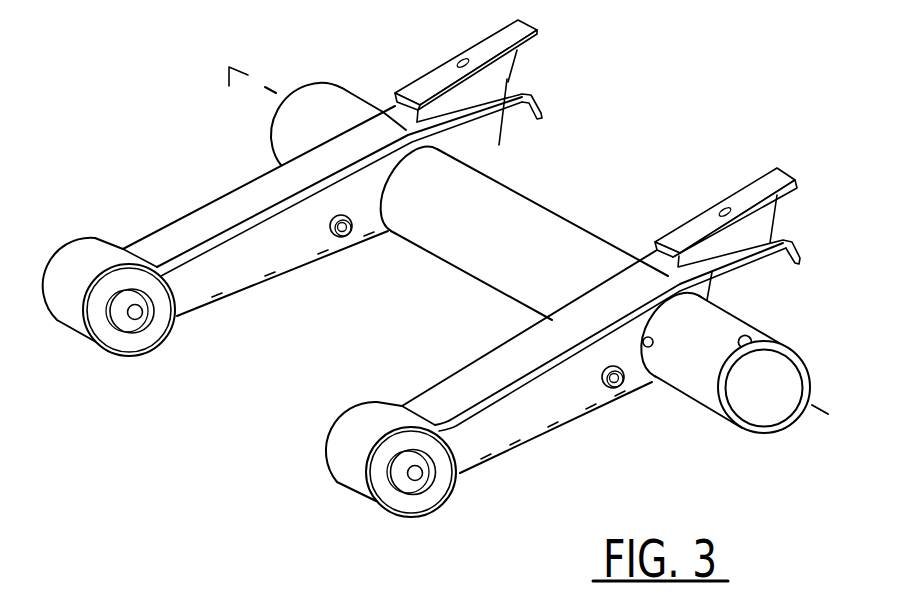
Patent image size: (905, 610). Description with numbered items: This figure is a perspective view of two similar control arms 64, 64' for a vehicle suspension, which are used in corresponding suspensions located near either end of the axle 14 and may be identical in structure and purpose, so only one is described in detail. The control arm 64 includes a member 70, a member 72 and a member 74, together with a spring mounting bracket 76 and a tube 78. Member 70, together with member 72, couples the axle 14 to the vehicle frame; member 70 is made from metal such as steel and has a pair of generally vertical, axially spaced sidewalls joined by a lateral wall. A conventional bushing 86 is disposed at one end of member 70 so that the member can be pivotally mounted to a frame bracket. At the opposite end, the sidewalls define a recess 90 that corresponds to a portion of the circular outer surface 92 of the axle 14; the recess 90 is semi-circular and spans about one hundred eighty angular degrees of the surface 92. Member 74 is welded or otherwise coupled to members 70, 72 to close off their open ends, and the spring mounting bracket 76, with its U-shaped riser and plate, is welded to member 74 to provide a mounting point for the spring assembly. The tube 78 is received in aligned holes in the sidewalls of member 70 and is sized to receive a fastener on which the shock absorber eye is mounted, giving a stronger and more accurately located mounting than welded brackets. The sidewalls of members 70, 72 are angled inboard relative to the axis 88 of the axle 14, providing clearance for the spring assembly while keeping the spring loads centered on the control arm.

The axle 14 is at (547, 235).
The control arm 64 is at (553, 370).
The control arm 64' is at (292, 188).
The member 70 is at (556, 461).
The member 72 is at (790, 293).
The member 74 is at (490, 367).
The spring mounting bracket 76 is at (757, 183).
The tube 78 is at (624, 386).
The bushing 86 is at (420, 503).
The axis 88 is at (865, 427).
The recess 90 is at (643, 342).
The outer surface 92 is at (747, 348).